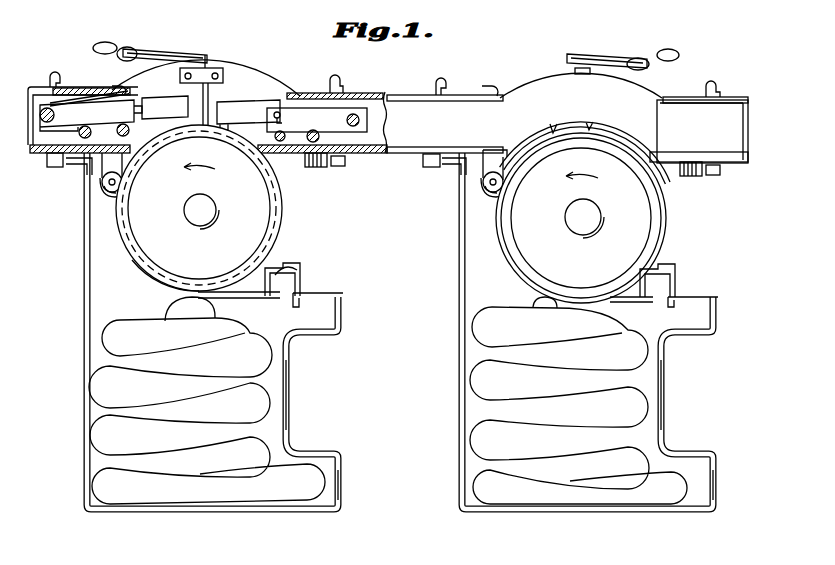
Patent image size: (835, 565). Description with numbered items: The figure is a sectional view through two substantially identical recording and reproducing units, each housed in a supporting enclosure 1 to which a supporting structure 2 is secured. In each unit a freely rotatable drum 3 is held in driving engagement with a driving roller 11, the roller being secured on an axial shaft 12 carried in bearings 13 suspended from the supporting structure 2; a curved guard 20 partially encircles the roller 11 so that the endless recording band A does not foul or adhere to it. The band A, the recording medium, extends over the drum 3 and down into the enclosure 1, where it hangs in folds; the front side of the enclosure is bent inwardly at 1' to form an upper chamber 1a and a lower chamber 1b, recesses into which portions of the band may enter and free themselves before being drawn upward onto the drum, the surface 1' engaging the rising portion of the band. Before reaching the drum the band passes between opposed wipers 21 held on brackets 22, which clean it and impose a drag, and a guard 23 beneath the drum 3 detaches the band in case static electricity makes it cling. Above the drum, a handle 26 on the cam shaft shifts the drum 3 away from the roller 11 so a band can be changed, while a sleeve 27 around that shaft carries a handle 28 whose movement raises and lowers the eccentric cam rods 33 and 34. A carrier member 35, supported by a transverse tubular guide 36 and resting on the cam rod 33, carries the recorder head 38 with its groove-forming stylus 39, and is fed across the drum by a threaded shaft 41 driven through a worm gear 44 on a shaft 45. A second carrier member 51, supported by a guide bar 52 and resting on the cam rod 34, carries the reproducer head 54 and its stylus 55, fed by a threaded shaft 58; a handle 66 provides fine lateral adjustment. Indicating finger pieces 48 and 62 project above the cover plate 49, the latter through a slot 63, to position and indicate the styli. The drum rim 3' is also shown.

The supporting enclosure 1 is at (374, 331).
The upper chamber 1a is at (330, 481).
The lower chamber 1b is at (326, 325).
The inwardly bent surface 1' is at (495, 395).
The supporting structure 2 is at (386, 155).
The drum 3 is at (407, 214).
The drum rim 3' is at (153, 280).
The driving roller 11 is at (103, 191).
The axial shaft 12 is at (104, 181).
The bearings 13 is at (107, 196).
The curved guard 20 is at (110, 205).
The wipers 21 is at (278, 262).
The brackets 22 is at (290, 283).
The guard 23 is at (240, 298).
The handle 26 is at (97, 45).
The sleeve 27 is at (251, 105).
The handle 28 is at (148, 52).
The cam rod 33 is at (282, 131).
The cam rod 34 is at (128, 126).
The carrier member 35 is at (343, 127).
The transverse tubular guide 36 is at (360, 120).
The recorder head 38 is at (292, 93).
The groove-forming stylus 39 is at (218, 136).
The threaded shaft 41 is at (320, 137).
The worm gear 44 is at (320, 168).
The shaft 45 is at (76, 163).
The indicating finger piece 48 is at (341, 76).
The cover plate 49 is at (740, 100).
The carrier member 51 is at (118, 122).
The transverse guide bar 52 is at (40, 115).
The reproducer head 54 is at (166, 104).
The sound reproducing stylus 55 is at (166, 137).
The threaded shaft 58 is at (44, 152).
The indicating finger piece 62 is at (52, 72).
The slot 63 is at (45, 87).
The handle 66 is at (117, 82).
The endless recording band A is at (170, 320).